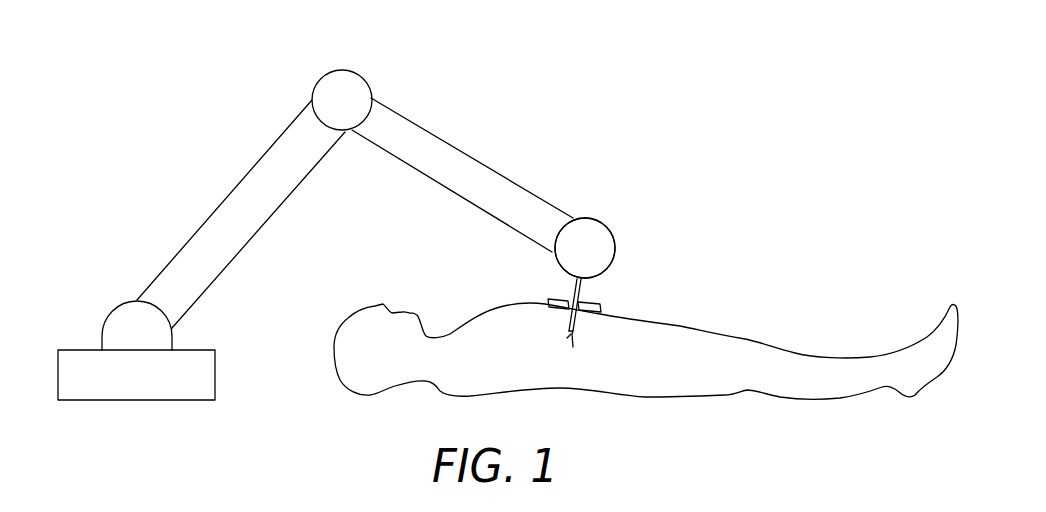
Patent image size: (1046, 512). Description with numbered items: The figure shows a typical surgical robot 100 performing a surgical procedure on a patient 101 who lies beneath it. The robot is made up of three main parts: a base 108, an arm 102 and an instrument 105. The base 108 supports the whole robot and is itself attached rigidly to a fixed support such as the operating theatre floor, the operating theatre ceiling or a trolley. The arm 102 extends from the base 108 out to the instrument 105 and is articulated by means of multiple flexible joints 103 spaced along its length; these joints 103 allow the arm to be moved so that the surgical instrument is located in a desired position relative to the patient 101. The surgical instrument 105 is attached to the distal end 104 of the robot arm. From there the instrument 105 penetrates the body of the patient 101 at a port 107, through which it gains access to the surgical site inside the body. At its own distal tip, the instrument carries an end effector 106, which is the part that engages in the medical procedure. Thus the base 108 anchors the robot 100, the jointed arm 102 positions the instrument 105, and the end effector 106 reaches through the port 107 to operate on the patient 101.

The surgical robot 100 is at (118, 263).
The patient 101 is at (695, 404).
The arm 102 is at (474, 151).
The flexible joints 103 is at (338, 69).
The distal end 104 is at (616, 248).
The instrument 105 is at (577, 329).
The end effector 106 is at (567, 337).
The port 107 is at (549, 300).
The base 108 is at (217, 363).